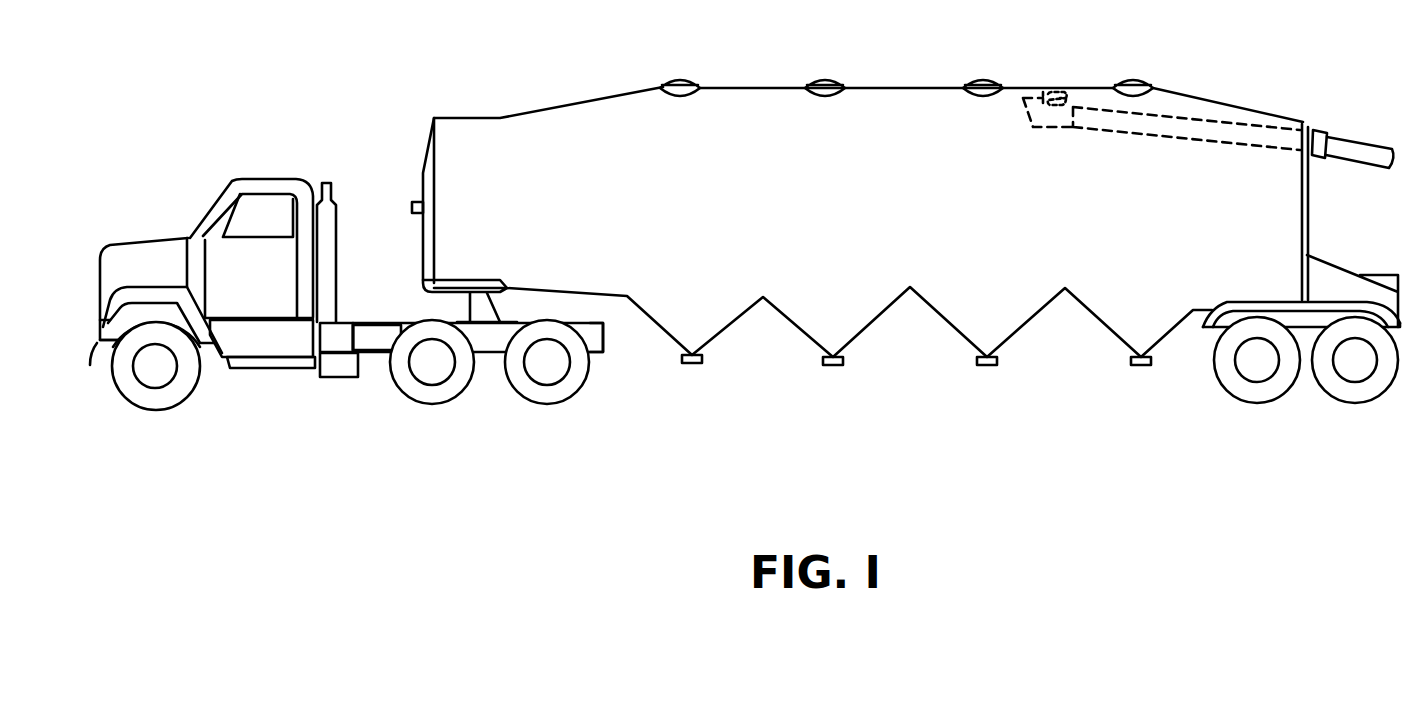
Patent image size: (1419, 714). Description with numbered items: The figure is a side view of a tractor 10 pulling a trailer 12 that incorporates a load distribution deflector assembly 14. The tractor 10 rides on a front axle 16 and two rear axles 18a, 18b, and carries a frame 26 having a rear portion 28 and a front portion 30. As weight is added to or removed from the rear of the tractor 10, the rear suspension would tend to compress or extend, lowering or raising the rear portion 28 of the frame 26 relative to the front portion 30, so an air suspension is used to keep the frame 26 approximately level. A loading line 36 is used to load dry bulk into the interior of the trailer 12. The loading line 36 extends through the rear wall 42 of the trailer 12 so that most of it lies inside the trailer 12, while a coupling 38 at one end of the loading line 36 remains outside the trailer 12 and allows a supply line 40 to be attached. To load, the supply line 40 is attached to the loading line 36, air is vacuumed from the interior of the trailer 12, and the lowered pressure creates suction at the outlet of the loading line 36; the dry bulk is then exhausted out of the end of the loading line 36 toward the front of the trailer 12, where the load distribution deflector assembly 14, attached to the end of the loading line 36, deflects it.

The tractor 10 is at (356, 272).
The trailer 12 is at (915, 208).
The load distribution deflector assembly 14 is at (1050, 97).
The front axle 16 is at (155, 372).
The rear axle 18a is at (431, 366).
The rear axle 18b is at (546, 366).
The frame 26 is at (375, 342).
The rear portion of the frame 28 is at (603, 337).
The front portion of the frame 30 is at (100, 352).
The loading line 36 is at (1167, 108).
The coupling 38 is at (1322, 131).
The supply line 40 is at (1363, 140).
The rear wall 42 is at (1309, 198).